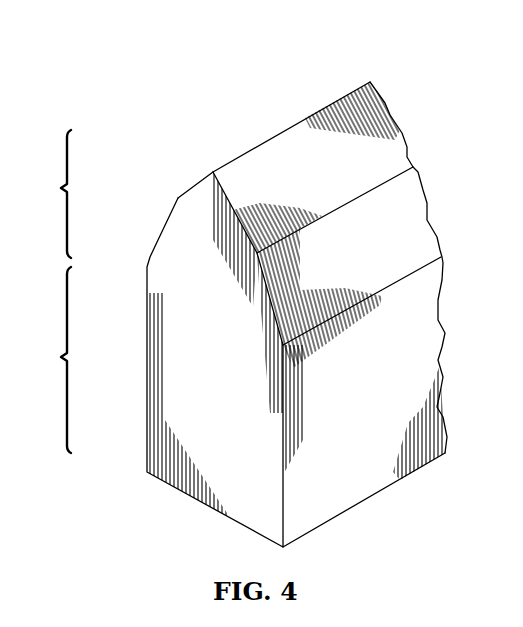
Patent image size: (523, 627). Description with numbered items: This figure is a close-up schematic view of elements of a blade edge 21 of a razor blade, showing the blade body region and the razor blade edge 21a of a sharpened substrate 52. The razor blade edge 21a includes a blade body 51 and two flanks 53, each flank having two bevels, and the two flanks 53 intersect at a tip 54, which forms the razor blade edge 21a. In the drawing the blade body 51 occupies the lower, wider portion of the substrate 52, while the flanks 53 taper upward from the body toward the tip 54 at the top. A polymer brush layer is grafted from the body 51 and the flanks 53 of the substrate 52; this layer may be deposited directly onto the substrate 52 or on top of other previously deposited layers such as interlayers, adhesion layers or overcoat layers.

The blade edge 21 is at (148, 58).
The razor blade edge 21a is at (284, 121).
The substrate 52 is at (182, 195).
The tip 54 is at (212, 170).
The flanks 53 is at (49, 194).
The blade body 51 is at (52, 360).